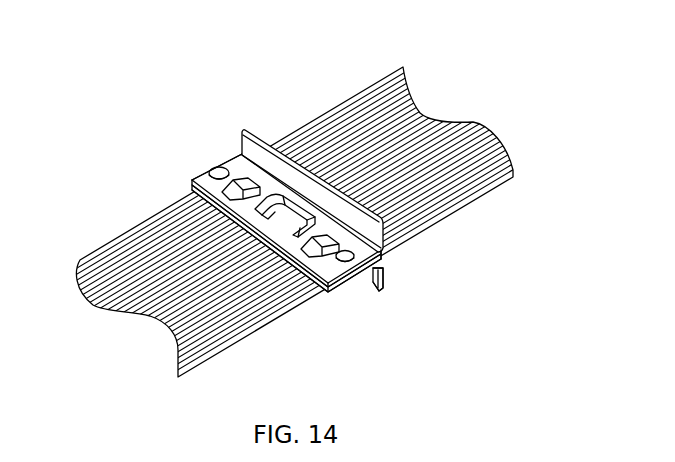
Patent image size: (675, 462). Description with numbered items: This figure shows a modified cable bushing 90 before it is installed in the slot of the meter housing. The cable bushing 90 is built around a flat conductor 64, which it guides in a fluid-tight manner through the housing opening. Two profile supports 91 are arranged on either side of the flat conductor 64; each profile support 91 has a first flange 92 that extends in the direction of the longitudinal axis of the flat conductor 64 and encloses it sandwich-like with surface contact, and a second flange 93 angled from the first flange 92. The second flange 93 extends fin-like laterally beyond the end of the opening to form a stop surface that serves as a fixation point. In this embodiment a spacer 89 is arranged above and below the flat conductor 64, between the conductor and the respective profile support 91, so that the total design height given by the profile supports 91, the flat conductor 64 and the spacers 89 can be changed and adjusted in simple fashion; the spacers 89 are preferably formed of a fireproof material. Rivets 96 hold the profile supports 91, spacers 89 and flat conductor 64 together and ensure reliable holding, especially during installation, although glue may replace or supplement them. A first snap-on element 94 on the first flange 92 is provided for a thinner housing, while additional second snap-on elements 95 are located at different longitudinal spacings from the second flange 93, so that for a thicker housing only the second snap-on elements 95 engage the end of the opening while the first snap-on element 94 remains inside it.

The cable bushing 90 is at (284, 191).
The flat conductor 64 is at (447, 137).
The second flange 93 is at (238, 166).
The first flange 92 is at (224, 167).
The rivets 96 is at (215, 172).
The second snap-on elements 95 is at (228, 194).
The snap-on element 94 is at (295, 216).
The profile support 91 is at (384, 282).
The spacer 89 is at (327, 289).